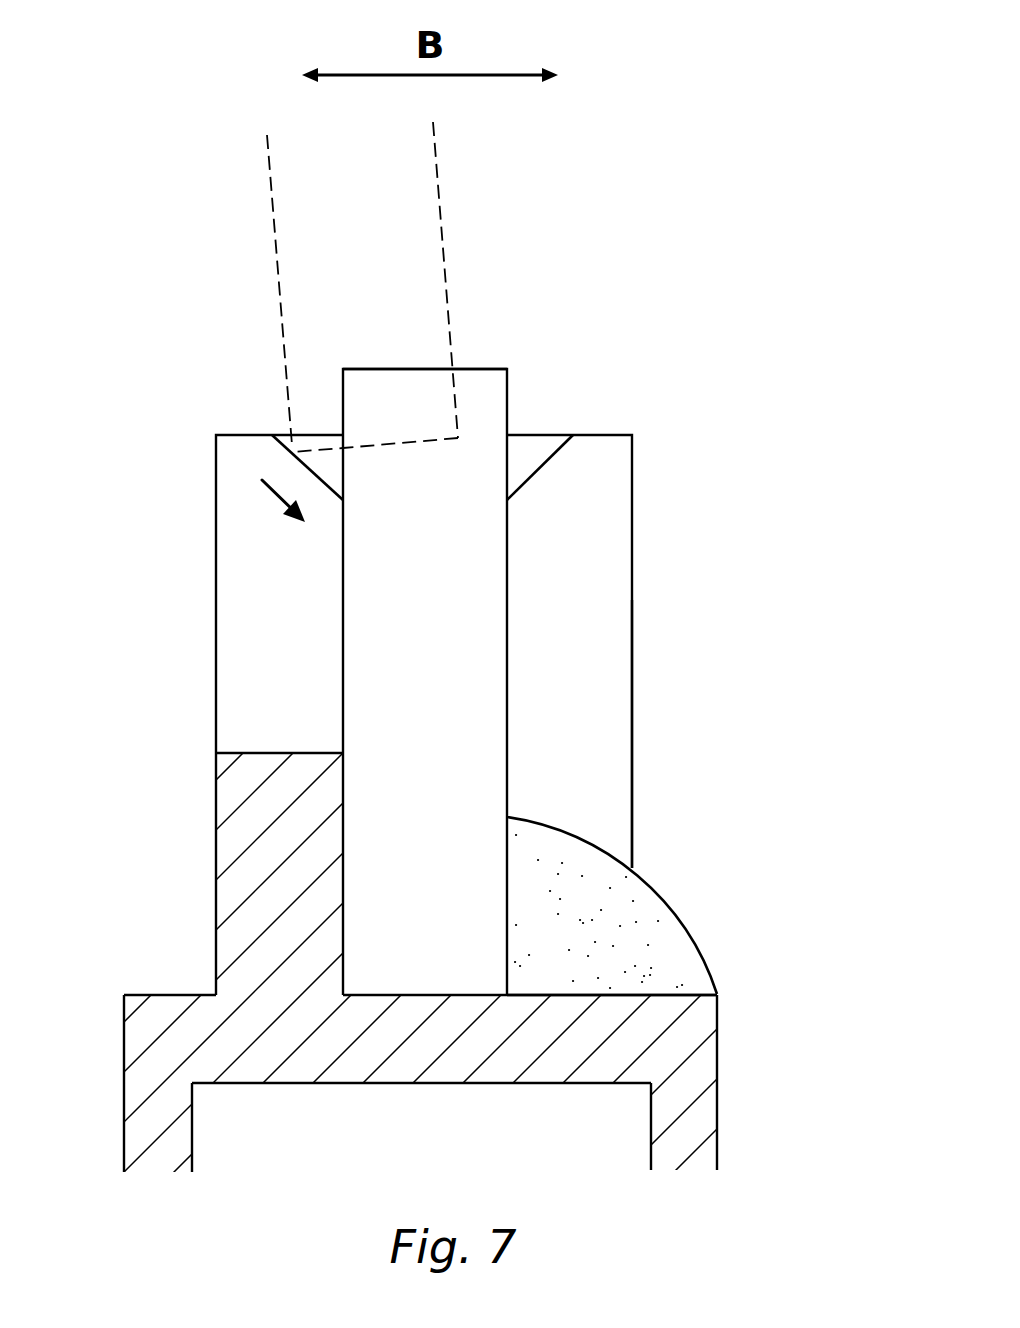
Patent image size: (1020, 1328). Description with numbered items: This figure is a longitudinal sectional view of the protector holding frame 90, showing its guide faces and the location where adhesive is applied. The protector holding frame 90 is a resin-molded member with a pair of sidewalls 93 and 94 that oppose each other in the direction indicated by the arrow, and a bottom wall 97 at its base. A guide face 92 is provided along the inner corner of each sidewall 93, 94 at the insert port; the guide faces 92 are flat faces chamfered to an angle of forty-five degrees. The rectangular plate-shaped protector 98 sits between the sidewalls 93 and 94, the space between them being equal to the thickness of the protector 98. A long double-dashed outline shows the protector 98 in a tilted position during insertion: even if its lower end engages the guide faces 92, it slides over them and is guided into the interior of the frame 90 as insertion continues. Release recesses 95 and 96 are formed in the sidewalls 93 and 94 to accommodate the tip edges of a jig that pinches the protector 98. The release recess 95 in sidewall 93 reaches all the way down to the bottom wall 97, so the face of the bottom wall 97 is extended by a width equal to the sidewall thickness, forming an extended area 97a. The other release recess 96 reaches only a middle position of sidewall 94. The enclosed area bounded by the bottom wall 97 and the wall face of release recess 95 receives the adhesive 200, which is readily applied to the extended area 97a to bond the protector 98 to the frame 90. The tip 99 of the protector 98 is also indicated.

The protector holding frame 90 is at (212, 800).
The guide face 92 is at (313, 465).
The sidewall 93 is at (216, 896).
The sidewall 94 is at (632, 820).
The release recess 95 is at (597, 692).
The release recess 96 is at (240, 624).
The bottom wall 97 is at (405, 990).
The extended area 97a is at (558, 992).
The protector 98 is at (440, 190).
The pin tip 99 is at (483, 368).
The adhesive 200 is at (687, 932).